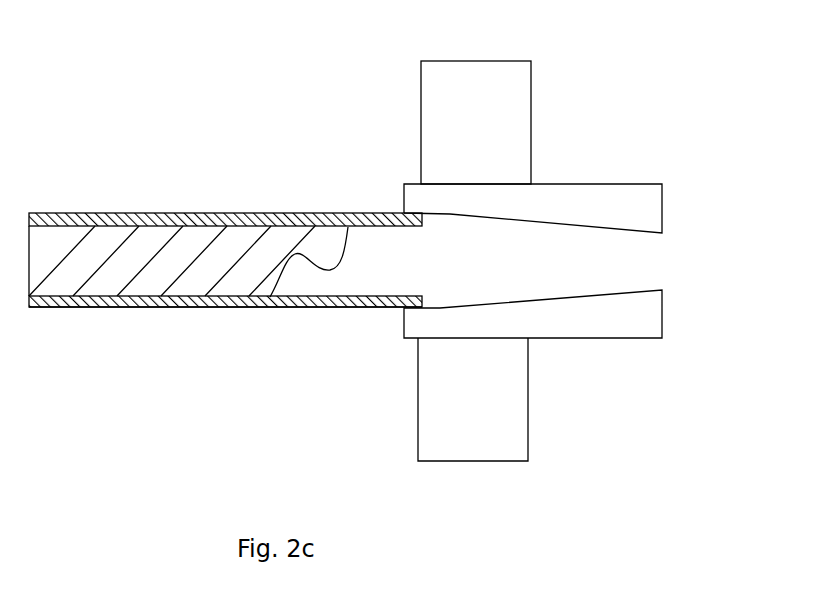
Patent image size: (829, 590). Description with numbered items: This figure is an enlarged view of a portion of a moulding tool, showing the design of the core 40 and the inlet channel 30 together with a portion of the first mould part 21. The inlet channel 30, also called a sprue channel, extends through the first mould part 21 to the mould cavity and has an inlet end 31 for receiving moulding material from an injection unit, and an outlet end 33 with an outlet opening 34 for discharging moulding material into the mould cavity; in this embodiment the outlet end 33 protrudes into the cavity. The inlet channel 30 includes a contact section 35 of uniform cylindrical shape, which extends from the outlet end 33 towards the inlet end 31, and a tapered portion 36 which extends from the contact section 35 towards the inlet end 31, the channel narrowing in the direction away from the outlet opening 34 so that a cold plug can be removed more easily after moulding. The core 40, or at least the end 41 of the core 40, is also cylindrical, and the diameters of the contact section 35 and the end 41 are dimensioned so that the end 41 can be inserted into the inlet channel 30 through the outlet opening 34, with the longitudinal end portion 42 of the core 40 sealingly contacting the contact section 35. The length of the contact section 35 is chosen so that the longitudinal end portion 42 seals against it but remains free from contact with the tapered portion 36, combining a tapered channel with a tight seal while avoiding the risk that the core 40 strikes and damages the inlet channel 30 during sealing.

The first mould part 21 is at (453, 102).
The inlet channel 30 is at (548, 255).
The inlet end 31 is at (647, 225).
The outlet end 33 is at (403, 330).
The outlet opening 34 is at (428, 252).
The contact section 35 is at (442, 312).
The tapered portion 36 is at (577, 300).
The core 40 is at (182, 213).
The end of the core 41 is at (372, 192).
The longitudinal end portion 42 is at (403, 308).